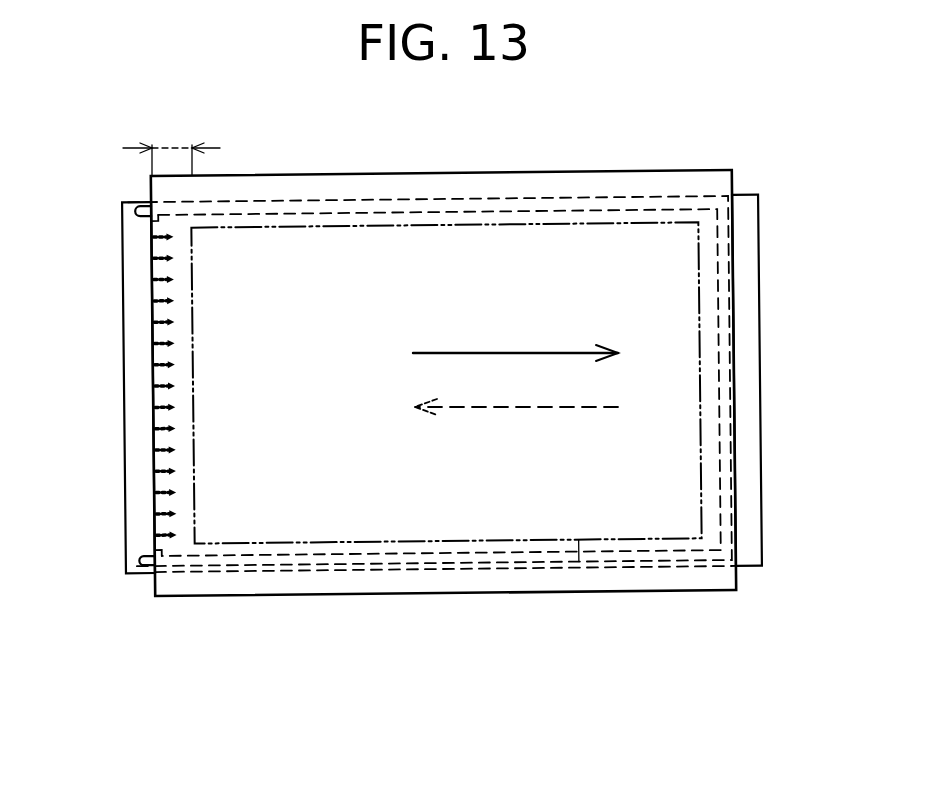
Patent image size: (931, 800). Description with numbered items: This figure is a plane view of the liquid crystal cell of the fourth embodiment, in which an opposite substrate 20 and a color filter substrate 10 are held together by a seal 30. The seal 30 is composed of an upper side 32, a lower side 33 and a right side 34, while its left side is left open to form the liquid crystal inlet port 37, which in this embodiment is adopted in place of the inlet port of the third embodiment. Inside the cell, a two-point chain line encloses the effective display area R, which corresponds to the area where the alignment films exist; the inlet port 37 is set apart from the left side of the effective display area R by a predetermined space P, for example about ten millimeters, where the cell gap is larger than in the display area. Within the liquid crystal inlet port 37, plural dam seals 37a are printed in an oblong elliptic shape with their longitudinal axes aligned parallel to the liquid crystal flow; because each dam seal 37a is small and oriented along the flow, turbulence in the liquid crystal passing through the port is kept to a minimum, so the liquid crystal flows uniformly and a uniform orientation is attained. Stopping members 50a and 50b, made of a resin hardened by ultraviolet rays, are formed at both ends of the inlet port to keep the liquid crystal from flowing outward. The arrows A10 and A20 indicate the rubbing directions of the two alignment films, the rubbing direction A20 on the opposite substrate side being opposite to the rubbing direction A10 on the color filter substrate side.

The color filter substrate 10 is at (750, 572).
The opposite substrate 20 is at (694, 597).
The seal 30 is at (430, 562).
The upper side 32 is at (540, 210).
The lower side 33 is at (520, 558).
The right side 34 is at (723, 333).
The liquid crystal inlet port 37 is at (157, 545).
The dam seals 37a is at (157, 303).
The stopping member 50a is at (147, 205).
The stopping member 50b is at (143, 568).
The effective display area R is at (577, 543).
The space P is at (171, 145).
The rubbing direction arrow A20 is at (500, 352).
The rubbing direction arrow A10 is at (512, 407).